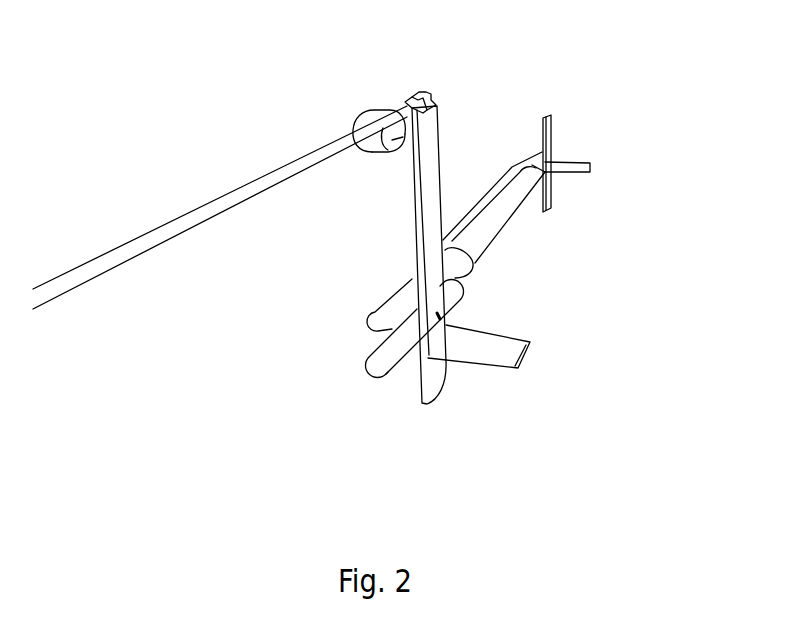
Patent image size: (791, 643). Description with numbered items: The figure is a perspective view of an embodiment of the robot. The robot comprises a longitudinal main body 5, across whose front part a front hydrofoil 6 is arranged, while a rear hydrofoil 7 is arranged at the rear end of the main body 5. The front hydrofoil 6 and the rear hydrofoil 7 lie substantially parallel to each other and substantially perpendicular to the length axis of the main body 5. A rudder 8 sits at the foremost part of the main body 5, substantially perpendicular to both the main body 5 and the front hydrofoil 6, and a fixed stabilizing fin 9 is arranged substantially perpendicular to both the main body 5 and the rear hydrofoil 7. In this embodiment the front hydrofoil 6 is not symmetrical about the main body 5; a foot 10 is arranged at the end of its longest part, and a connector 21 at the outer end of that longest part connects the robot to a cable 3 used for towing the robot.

The cable 3 is at (205, 211).
The main body 5 is at (480, 240).
The front hydrofoil 6 is at (402, 257).
The rear hydrofoil 7 is at (545, 212).
The rudder 8 is at (497, 368).
The fixed stabilizing fin 9 is at (567, 161).
The foot 10 is at (383, 109).
The connector 21 is at (423, 92).